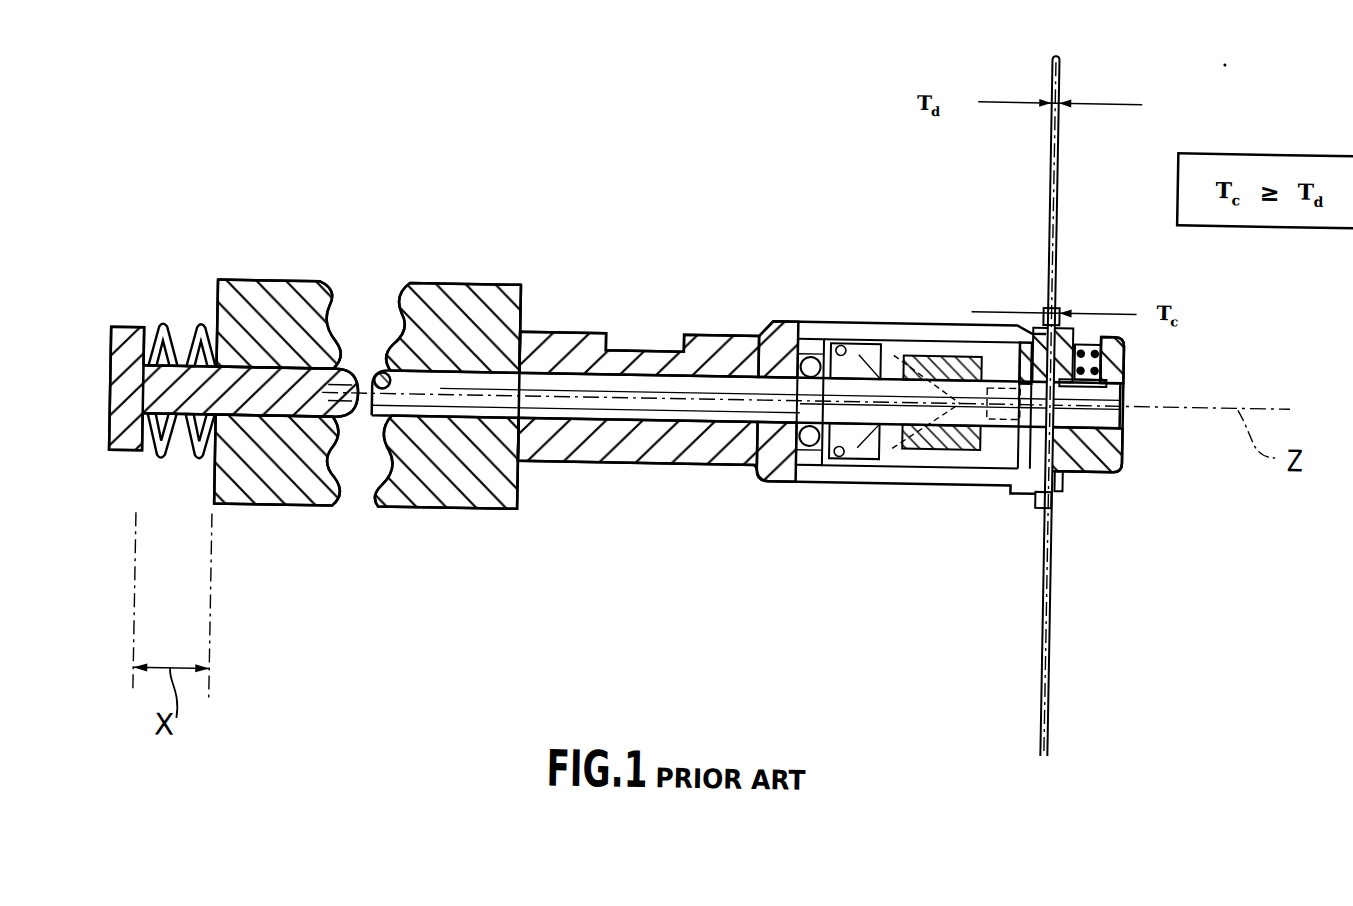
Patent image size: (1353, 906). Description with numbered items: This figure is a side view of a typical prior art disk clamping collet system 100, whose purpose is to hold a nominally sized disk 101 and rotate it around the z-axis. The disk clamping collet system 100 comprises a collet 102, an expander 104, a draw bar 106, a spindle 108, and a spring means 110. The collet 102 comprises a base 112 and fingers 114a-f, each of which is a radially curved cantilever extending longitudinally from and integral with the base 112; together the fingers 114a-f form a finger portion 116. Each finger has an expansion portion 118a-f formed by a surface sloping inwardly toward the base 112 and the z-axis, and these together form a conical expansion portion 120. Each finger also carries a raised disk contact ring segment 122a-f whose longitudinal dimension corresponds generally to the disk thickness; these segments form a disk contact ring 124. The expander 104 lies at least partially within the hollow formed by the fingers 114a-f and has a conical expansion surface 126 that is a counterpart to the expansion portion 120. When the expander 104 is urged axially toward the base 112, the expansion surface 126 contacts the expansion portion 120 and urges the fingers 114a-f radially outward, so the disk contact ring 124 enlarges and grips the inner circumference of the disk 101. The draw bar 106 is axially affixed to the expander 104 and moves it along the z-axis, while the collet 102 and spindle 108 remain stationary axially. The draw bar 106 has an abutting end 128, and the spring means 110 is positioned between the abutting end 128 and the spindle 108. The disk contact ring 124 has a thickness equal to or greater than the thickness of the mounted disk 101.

The disk clamping collet system 100 is at (476, 603).
The disk 101 is at (1055, 690).
The collet 102 is at (758, 311).
The expander 104 is at (893, 365).
The draw bar 106 is at (612, 390).
The spindle 108 is at (455, 287).
The spring means 110 is at (167, 326).
The base 112 is at (714, 468).
The fingers 114a-f is at (878, 478).
The finger portion 116 is at (827, 503).
The expansion portions 118a-f is at (1122, 458).
The expansion portion 120 is at (1092, 490).
The disk contact ring segments 122a-f is at (1064, 500).
The disk contact ring 124 is at (1030, 508).
The expansion surface 126 is at (1040, 308).
The abutting end 128 is at (113, 462).